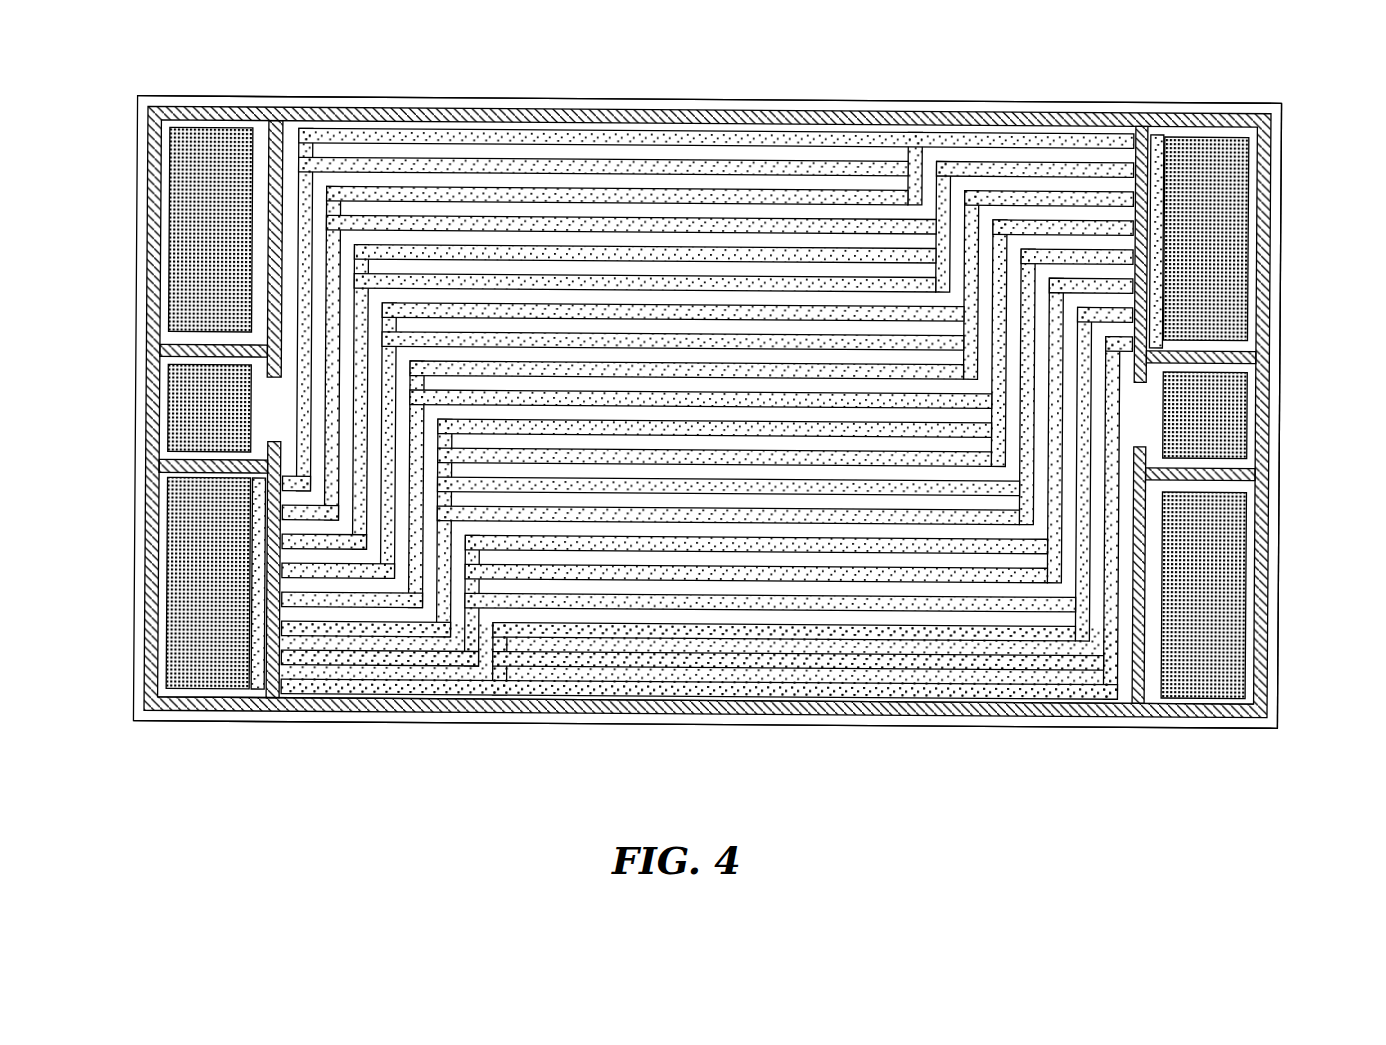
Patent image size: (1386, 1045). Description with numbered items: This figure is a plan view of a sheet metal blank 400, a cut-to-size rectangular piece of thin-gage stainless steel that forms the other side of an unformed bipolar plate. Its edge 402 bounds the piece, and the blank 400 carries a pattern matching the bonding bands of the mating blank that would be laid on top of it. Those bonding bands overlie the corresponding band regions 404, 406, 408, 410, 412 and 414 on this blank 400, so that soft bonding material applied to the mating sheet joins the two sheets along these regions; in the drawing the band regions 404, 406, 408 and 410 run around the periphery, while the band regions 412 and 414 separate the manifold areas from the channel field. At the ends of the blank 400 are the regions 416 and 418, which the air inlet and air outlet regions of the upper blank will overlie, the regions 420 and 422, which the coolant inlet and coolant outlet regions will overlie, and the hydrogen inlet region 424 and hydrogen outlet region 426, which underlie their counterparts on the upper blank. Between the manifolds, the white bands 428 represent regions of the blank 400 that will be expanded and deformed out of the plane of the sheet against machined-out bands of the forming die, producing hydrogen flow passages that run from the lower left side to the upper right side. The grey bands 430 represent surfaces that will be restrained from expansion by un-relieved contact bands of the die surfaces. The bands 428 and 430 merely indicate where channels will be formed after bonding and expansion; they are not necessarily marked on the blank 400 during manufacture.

The sheet metal blank 400 is at (1042, 727).
The bottom edge 402 is at (820, 714).
The band region 404 is at (1258, 587).
The band region 406 is at (770, 108).
The band region 408 is at (158, 232).
The band region 410 is at (915, 710).
The band region 412 is at (277, 152).
The band region 414 is at (208, 348).
The region 416 is at (200, 210).
The region 418 is at (1222, 615).
The region 420 is at (200, 418).
The region 422 is at (1228, 413).
The hydrogen inlet region 424 is at (175, 603).
The hydrogen outlet region 426 is at (1240, 215).
The white bands 428 is at (655, 240).
The grey bands 430 is at (615, 628).